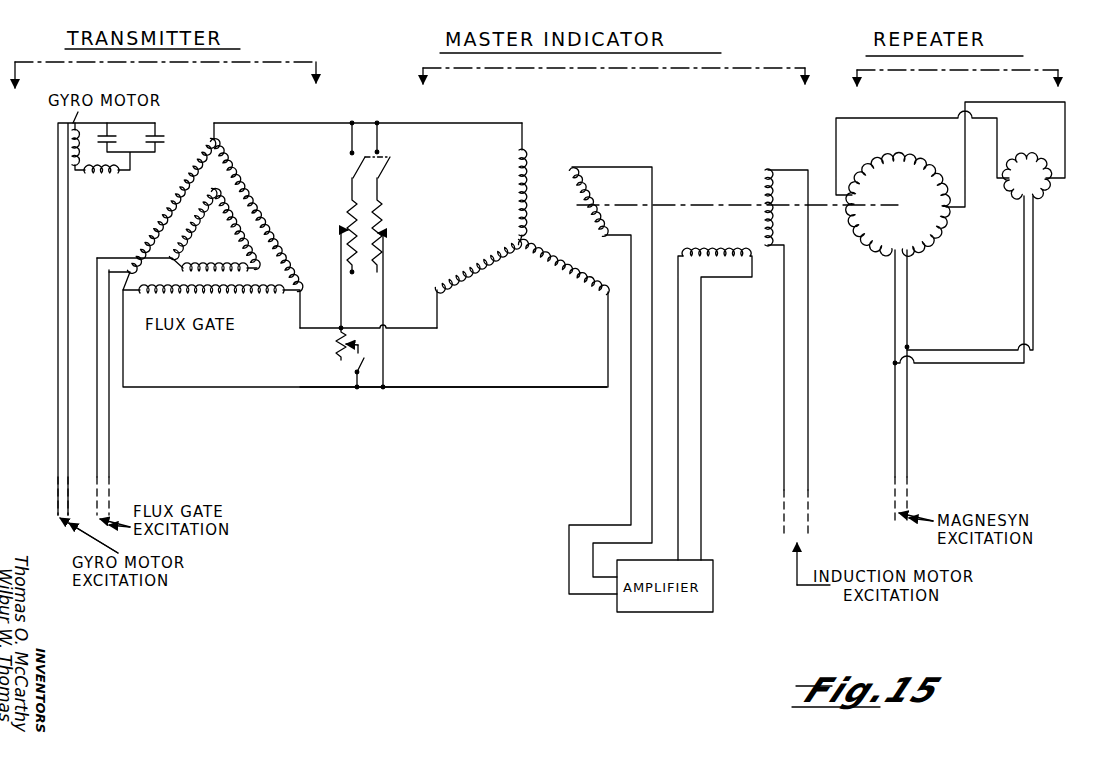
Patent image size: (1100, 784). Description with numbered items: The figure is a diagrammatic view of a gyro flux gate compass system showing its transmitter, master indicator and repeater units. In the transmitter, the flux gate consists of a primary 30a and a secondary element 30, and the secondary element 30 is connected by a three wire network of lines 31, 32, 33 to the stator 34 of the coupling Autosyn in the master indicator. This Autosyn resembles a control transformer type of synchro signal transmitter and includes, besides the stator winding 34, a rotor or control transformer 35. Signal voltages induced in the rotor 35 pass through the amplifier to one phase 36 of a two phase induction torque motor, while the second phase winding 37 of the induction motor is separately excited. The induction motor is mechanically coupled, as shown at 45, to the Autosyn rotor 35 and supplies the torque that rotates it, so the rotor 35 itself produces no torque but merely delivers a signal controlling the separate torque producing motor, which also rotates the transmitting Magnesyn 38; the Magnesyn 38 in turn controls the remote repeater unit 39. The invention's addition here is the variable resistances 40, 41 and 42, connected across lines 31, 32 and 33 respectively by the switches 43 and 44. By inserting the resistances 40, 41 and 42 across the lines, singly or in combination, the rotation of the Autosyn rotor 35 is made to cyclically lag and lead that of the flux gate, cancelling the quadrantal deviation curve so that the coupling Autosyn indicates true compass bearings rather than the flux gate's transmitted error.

The secondary element 30 is at (240, 175).
The primary 30a is at (240, 226).
The line 31 is at (316, 122).
The line 32 is at (421, 330).
The line 33 is at (456, 389).
The stator 34 is at (523, 299).
The rotor 35 is at (628, 203).
The phase 36 is at (720, 238).
The second phase winding 37 is at (762, 190).
The Magnesyn 38 is at (909, 200).
The repeater unit 39 is at (1043, 188).
The variable resistance 40 is at (335, 351).
The variable resistance 41 is at (344, 227).
The variable resistance 42 is at (381, 215).
The switch 43 is at (365, 364).
The switch 44 is at (386, 172).
The mechanical coupling 45 is at (672, 205).